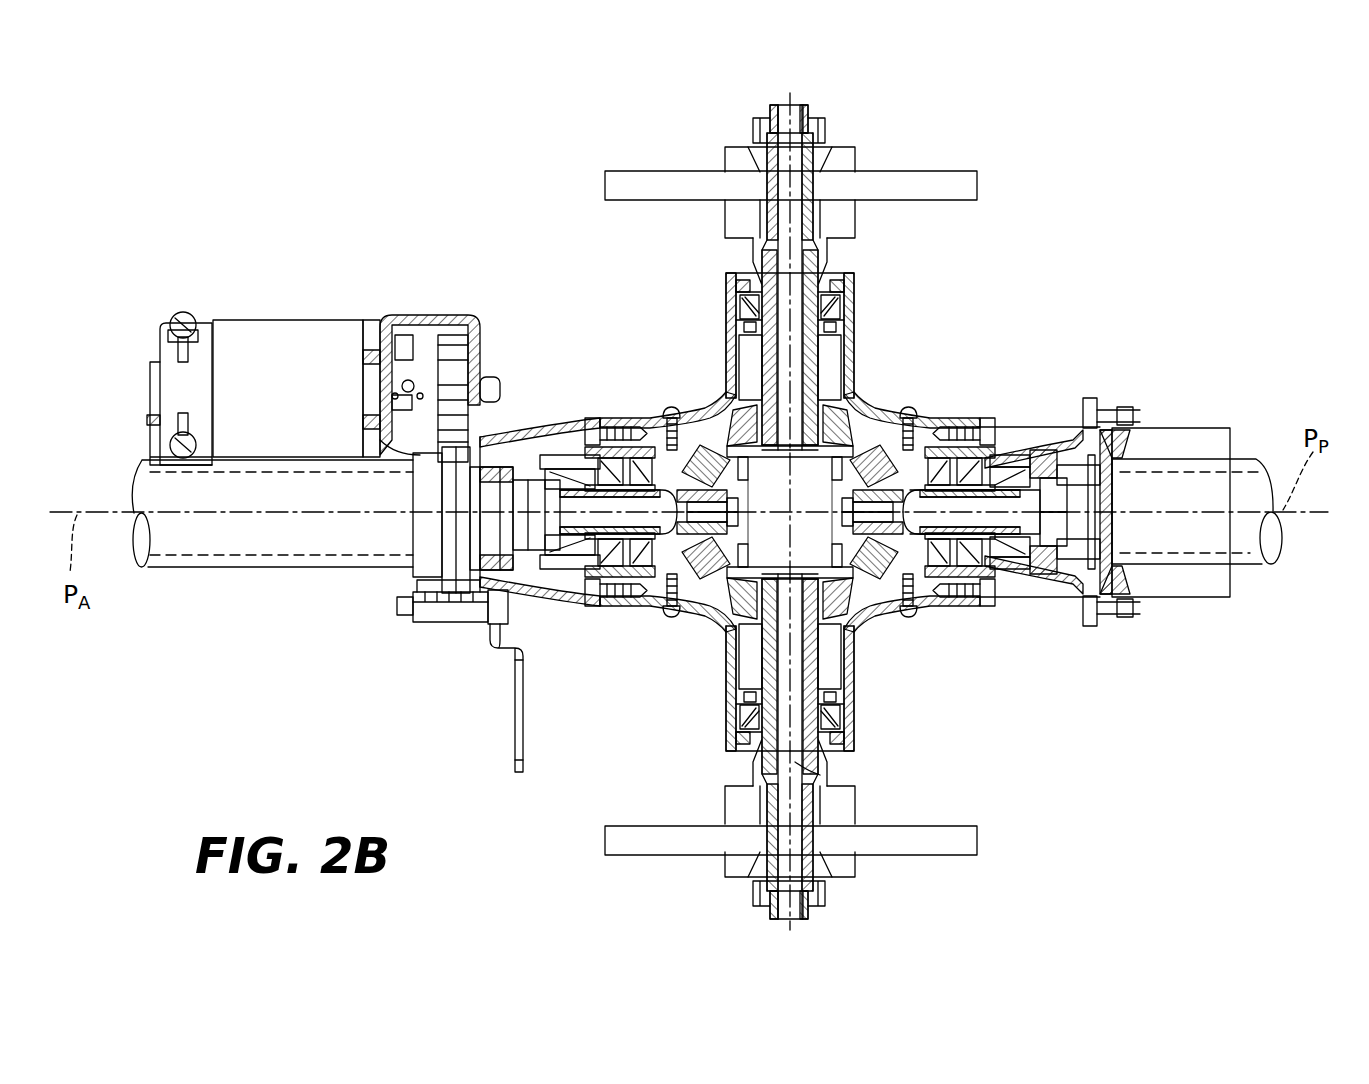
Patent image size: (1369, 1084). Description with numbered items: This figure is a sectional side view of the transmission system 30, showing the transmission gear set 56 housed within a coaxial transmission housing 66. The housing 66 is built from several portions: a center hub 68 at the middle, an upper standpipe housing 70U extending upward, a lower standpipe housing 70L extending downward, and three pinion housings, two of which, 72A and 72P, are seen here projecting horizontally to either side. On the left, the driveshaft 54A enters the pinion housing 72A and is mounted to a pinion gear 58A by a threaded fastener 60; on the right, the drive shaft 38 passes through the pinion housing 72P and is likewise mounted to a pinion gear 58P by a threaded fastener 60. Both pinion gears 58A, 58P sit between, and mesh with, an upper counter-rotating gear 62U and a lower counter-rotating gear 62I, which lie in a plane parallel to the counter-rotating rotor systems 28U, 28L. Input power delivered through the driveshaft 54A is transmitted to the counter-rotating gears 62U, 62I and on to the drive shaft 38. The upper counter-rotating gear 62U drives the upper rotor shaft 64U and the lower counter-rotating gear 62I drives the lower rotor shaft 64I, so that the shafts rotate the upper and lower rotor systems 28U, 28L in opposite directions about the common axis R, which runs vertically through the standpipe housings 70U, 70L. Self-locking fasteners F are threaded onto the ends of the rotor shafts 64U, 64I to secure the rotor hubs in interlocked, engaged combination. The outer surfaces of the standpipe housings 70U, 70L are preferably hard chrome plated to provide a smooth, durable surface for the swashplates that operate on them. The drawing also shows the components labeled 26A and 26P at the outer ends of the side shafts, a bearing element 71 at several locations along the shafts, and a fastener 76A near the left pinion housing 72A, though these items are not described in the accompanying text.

The anterior propeller shaft 26A is at (205, 568).
The posterior propeller shaft 26P is at (1180, 428).
The upper counter-rotating rotor system 28U is at (938, 171).
The lower counter-rotating rotor system 28L is at (933, 855).
The transmission system 30 is at (1143, 253).
The drive shaft 38 is at (1052, 442).
The driveshaft 54A is at (506, 452).
The transmission gear set 56 is at (783, 507).
The pinion gear 58A is at (663, 595).
The pinion gear 58P is at (937, 605).
The threaded fastener 60 is at (614, 605).
The upper counter-rotating gear 62U is at (884, 430).
The lower counter-rotating gear 62I is at (870, 608).
The upper rotor shaft 64U is at (817, 252).
The lower rotor shaft 64I is at (763, 778).
The coaxial transmission housing 66 is at (860, 398).
The center hub 68 is at (664, 414).
The upper standpipe housing 70U is at (723, 400).
The lower standpipe housing 70L is at (723, 612).
The bearing 71 is at (582, 462).
The pinion housing 72A is at (532, 594).
The pinion housing 72P is at (1007, 427).
The anterior mounting bolt 76A is at (408, 588).
The self-locking fastener F is at (822, 125).
The axis R is at (820, 775).